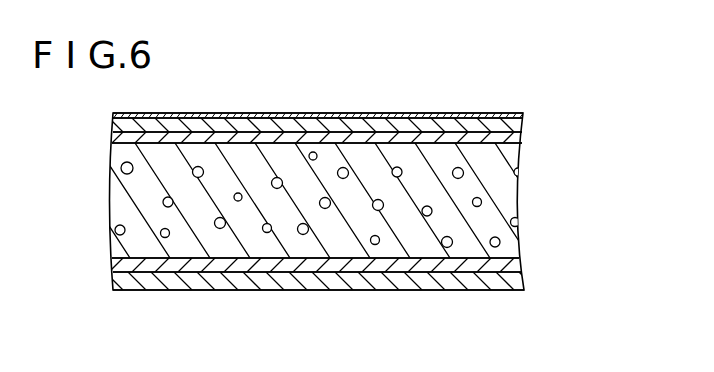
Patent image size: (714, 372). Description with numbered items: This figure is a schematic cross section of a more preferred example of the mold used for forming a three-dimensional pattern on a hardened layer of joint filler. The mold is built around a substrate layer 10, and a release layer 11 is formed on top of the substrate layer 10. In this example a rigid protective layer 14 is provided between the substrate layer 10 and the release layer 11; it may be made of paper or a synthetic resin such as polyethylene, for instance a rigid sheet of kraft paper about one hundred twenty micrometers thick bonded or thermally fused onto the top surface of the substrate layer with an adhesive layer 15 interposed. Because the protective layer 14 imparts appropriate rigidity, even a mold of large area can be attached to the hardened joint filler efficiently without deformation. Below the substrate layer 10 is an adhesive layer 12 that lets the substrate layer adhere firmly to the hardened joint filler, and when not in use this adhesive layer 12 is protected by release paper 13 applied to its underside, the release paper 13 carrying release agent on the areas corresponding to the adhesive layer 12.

The substrate layer 10 is at (507, 202).
The release layer 11 is at (500, 114).
The adhesive layer 12 is at (517, 266).
The release paper 13 is at (517, 287).
The rigid protective layer 14 is at (517, 127).
The adhesive layer 15 is at (518, 139).